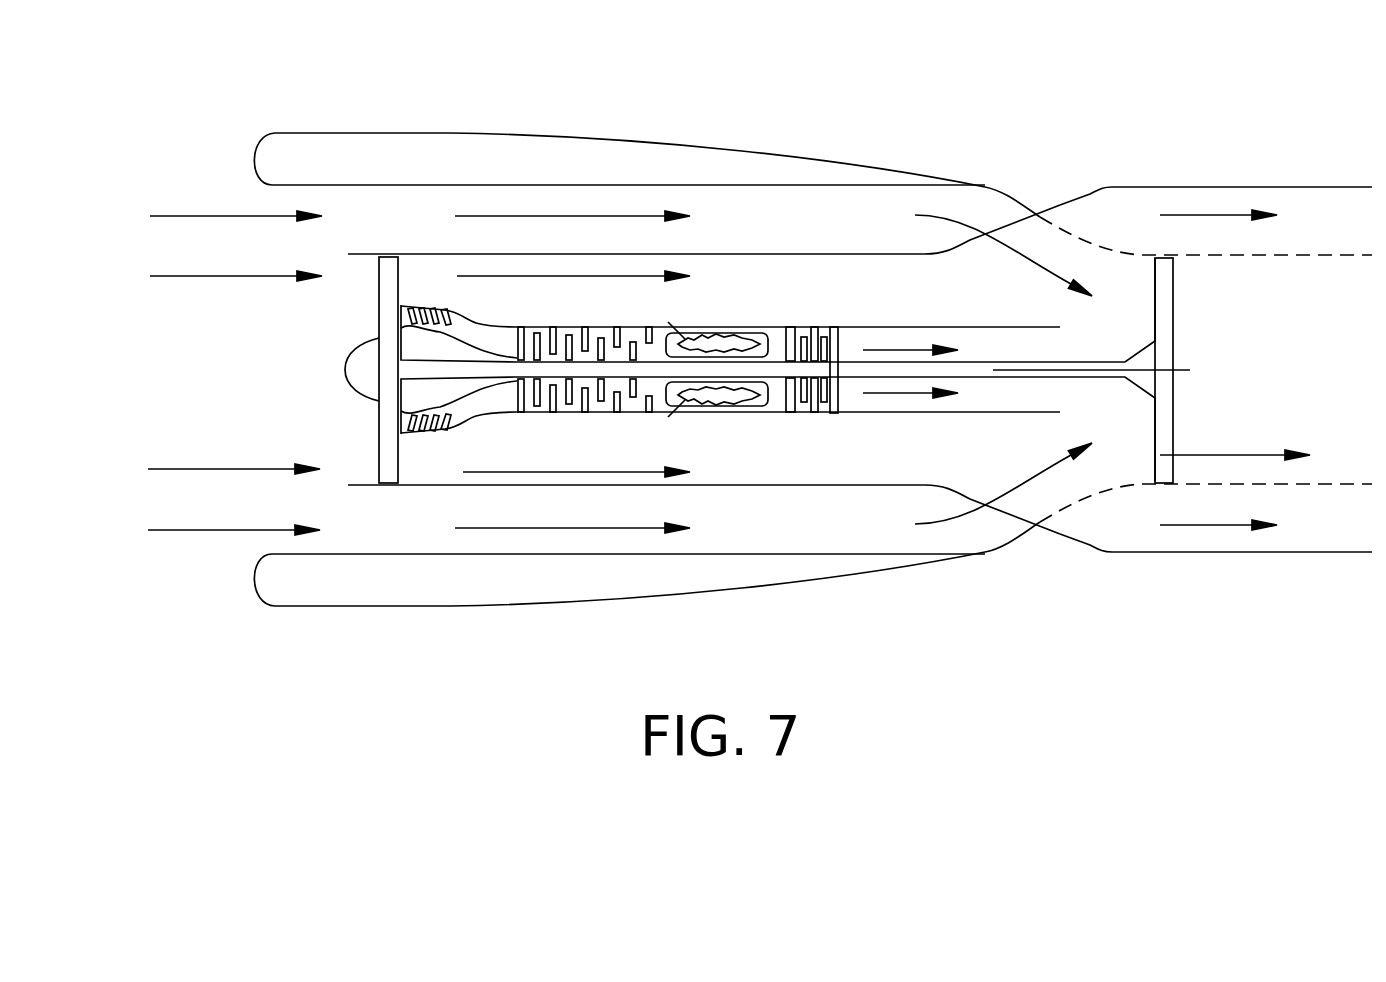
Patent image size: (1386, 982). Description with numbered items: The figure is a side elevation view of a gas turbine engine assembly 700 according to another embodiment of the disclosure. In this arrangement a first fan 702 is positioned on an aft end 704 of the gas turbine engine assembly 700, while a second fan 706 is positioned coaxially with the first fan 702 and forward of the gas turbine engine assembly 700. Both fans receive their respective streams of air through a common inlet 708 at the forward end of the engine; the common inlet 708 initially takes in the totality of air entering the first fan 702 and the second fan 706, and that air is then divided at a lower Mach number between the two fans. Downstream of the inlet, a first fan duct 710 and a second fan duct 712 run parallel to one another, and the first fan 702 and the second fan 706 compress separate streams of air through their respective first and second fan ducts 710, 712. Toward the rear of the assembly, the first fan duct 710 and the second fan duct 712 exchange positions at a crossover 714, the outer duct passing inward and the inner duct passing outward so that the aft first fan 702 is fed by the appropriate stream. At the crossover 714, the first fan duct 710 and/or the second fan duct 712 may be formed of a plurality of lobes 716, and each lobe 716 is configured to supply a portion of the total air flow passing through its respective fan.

The gas turbine engine assembly 700 is at (858, 104).
The first fan 702 is at (1166, 305).
The aft end 704 is at (1062, 593).
The second fan 706 is at (388, 470).
The common inlet 708 is at (252, 552).
The first fan duct 710 is at (752, 187).
The second fan duct 712 is at (762, 255).
The crossover 714 is at (1080, 103).
The lobe 716 is at (1012, 192).